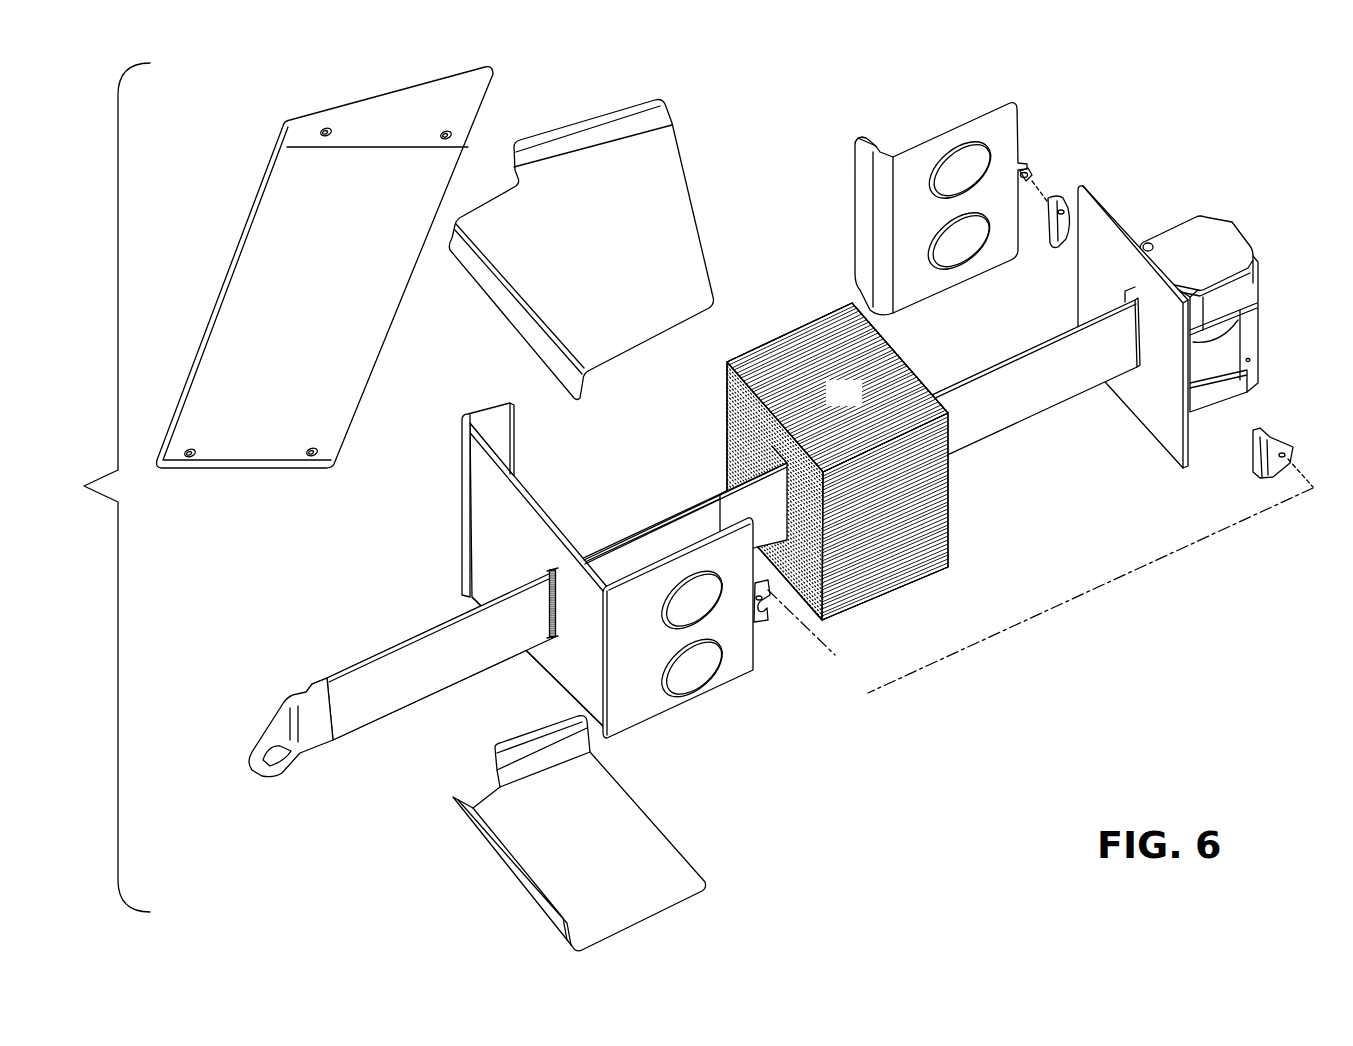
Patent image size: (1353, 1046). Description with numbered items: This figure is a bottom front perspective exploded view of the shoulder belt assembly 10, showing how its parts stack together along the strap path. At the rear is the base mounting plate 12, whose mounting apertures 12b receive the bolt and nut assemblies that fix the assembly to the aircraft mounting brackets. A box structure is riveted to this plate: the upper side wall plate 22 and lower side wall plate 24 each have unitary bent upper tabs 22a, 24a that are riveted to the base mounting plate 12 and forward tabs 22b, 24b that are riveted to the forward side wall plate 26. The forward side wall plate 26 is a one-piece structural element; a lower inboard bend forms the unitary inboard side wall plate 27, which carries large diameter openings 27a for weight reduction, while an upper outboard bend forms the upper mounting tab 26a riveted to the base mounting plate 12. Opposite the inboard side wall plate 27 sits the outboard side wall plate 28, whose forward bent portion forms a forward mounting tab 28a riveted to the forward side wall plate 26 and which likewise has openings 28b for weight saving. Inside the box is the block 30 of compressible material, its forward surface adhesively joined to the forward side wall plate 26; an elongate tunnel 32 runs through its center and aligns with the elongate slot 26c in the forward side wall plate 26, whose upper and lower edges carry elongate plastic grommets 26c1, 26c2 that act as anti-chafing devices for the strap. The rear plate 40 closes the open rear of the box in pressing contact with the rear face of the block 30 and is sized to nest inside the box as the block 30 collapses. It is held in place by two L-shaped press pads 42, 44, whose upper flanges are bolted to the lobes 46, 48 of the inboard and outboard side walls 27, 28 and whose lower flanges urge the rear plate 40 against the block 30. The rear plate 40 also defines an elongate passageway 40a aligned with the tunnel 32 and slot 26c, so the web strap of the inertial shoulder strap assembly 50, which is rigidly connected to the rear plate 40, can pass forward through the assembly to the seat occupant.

The shoulder belt assembly 10 is at (1186, 150).
The base mounting plate 12 is at (321, 304).
The mounting apertures 12b is at (444, 133).
The upper side wall plate 22 is at (564, 223).
The upper tab 22a is at (621, 126).
The forward tab 22b is at (507, 311).
The lower side wall plate 24 is at (573, 815).
The upper tab 24a is at (530, 742).
The forward tab 24b is at (503, 863).
The forward side wall plate 26 is at (500, 566).
The upper mounting tab 26a is at (504, 424).
The elongate slot 26c is at (540, 570).
The upper grommet 26c1 is at (547, 575).
The lower grommet 26c2 is at (557, 637).
The inboard side wall plate 27 is at (695, 628).
The openings 27a is at (685, 624).
The outboard side wall plate 28 is at (964, 181).
The forward mounting tab 28a is at (875, 150).
The openings 28b is at (957, 229).
The block of compressible material 30 is at (800, 461).
The elongate tunnel 32 is at (772, 460).
The rear plate 40 is at (1148, 422).
The elongate passageway 40a is at (1133, 298).
The press pad 42 is at (1283, 443).
The press pad 44 is at (1051, 240).
The lobe 46 is at (765, 606).
The lobe 48 is at (1029, 172).
The inertial shoulder strap assembly 50 is at (1201, 362).